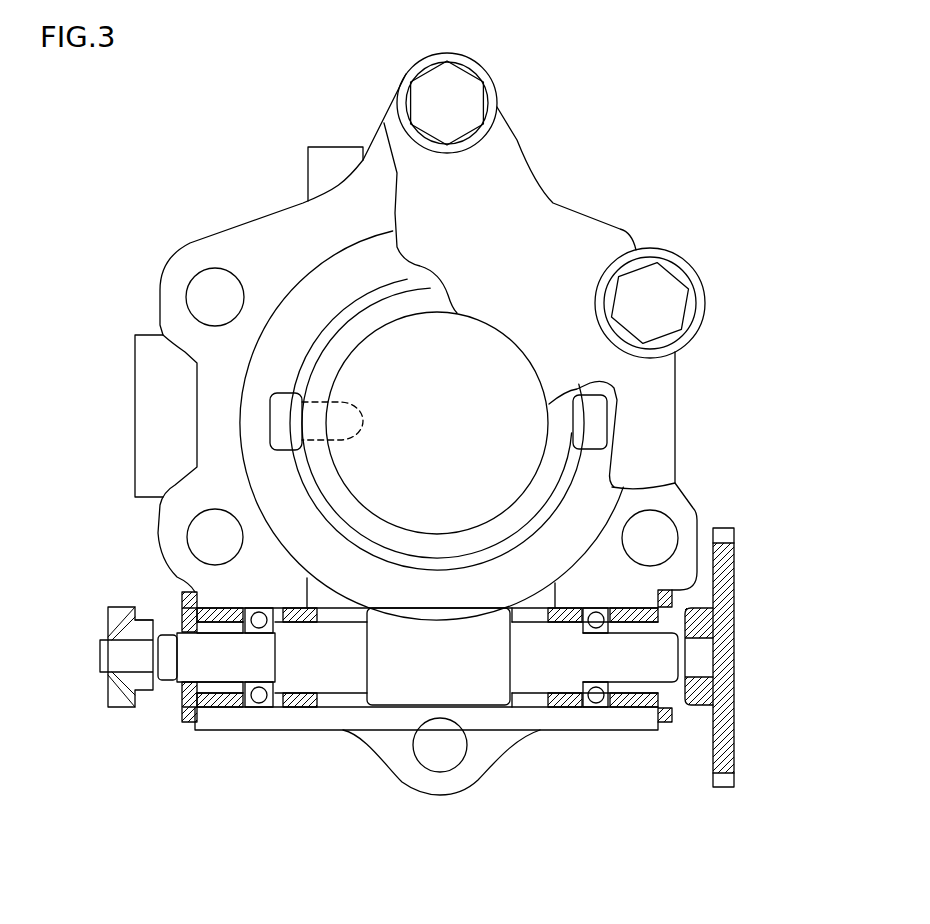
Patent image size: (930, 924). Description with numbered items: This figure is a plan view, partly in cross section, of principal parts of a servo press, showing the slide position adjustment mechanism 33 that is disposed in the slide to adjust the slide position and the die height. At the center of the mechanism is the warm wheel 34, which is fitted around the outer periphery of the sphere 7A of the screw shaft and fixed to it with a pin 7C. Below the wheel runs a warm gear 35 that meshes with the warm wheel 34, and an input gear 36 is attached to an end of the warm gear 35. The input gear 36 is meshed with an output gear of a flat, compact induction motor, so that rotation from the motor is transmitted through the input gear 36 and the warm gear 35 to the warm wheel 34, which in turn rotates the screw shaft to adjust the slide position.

The sphere 7A is at (520, 450).
The pin 7C is at (348, 410).
The slide position adjustment mechanism 33 is at (627, 787).
The warm wheel 34 is at (597, 498).
The warm gear 35 is at (397, 690).
The input gear 36 is at (734, 745).